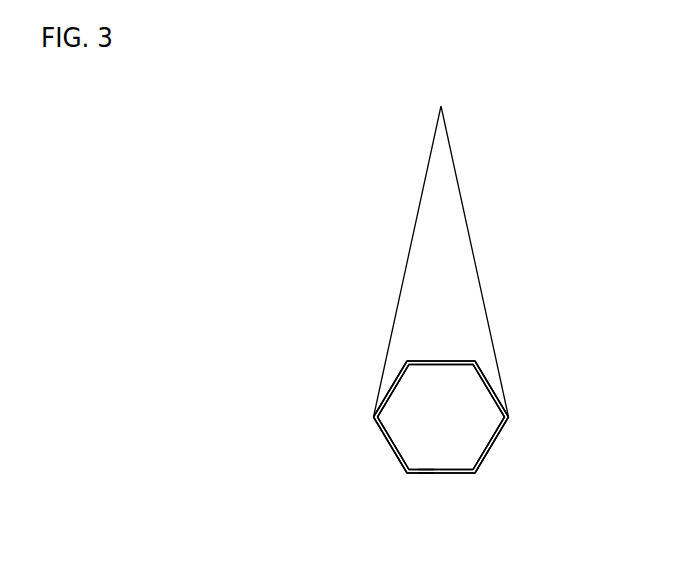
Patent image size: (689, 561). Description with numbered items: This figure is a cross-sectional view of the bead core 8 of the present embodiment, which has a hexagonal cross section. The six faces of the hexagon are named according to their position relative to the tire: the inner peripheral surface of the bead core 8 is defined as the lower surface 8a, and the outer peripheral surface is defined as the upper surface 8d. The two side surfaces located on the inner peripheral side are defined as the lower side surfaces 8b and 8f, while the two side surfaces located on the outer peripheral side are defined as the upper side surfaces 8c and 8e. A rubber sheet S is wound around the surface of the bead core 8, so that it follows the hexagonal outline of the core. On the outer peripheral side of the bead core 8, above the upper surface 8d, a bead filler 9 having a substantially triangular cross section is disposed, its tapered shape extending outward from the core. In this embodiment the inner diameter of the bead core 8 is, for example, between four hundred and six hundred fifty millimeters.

The bead filler 9 is at (440, 247).
The bead core 8 is at (438, 425).
The lower surface 8a is at (442, 473).
The lower side surface 8b is at (389, 447).
The upper side surface 8c is at (391, 387).
The upper surface 8d is at (462, 362).
The upper side surface 8e is at (490, 389).
The lower side surface 8f is at (490, 449).
The rubber sheet S is at (425, 473).